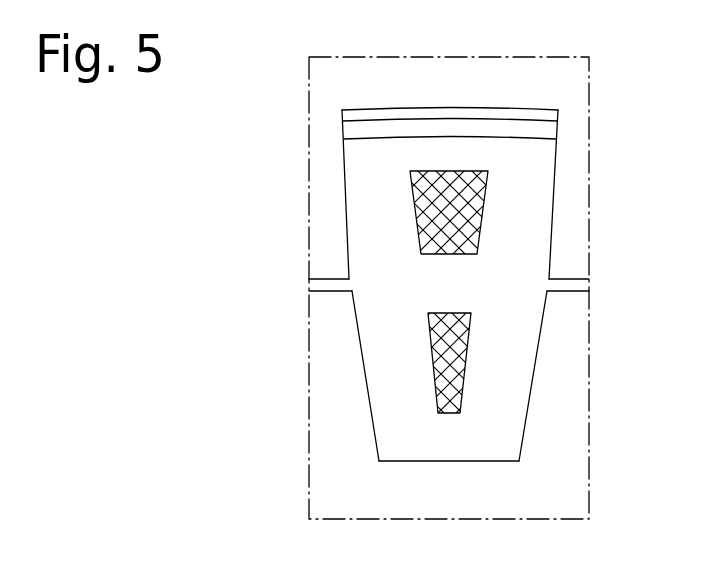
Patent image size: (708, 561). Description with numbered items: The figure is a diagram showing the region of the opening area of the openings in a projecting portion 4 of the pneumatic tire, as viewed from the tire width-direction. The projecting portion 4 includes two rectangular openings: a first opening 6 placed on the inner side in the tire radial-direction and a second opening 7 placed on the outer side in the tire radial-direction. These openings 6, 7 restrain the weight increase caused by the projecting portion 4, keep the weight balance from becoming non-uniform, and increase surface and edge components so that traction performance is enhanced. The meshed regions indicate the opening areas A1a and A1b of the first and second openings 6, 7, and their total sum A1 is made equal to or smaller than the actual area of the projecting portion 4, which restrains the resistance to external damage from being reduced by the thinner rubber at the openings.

The projecting portion 4 is at (553, 237).
The first opening 6 is at (465, 362).
The second opening 7 is at (486, 195).
The total sum of opening areas A1 is at (457, 292).
The opening area A1a is at (450, 354).
The opening area A1b is at (465, 224).